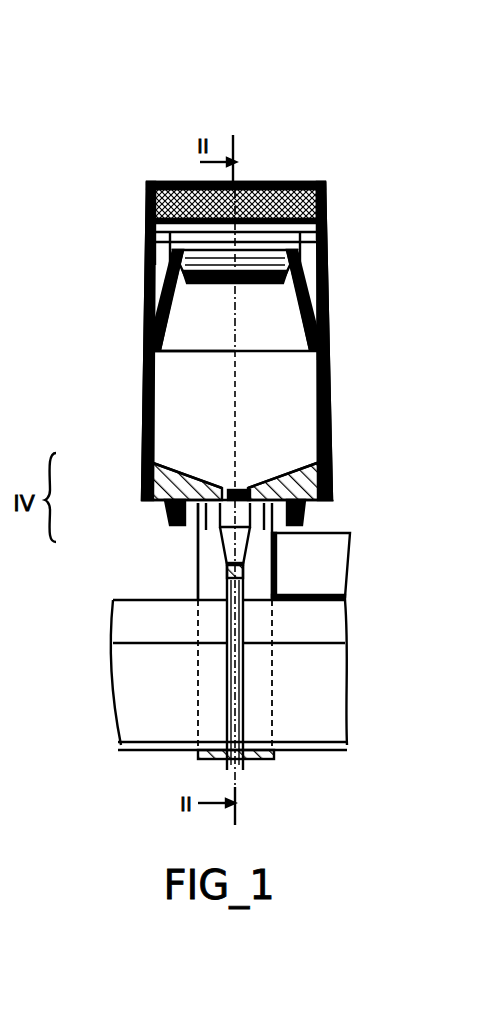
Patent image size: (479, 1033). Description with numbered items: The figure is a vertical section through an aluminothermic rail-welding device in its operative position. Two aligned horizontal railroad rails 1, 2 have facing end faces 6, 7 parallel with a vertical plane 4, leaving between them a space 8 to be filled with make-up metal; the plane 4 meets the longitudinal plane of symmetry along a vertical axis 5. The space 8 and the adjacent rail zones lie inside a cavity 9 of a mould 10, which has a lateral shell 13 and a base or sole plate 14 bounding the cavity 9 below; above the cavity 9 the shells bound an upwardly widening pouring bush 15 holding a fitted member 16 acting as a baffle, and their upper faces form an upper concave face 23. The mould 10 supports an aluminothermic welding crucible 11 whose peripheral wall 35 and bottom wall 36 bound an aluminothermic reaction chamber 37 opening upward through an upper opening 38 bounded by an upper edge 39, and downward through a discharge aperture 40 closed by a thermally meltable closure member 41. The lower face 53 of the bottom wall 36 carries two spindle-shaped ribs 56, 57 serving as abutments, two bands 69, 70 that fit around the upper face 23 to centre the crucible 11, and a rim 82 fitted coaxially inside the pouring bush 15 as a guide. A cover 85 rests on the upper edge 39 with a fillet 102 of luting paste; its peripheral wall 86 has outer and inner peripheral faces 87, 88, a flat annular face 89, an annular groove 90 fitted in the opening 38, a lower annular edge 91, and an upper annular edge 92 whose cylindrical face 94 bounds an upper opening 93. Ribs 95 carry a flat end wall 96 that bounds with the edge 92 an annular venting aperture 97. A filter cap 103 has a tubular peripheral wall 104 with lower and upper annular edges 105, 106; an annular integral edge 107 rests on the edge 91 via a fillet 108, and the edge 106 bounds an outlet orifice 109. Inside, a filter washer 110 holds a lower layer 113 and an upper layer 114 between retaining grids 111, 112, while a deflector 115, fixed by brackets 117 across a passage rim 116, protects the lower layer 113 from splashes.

The railroad rail 1 is at (322, 694).
The railroad rail 2 is at (148, 706).
The vertical plane 4 is at (226, 636).
The vertical axis 5 is at (248, 402).
The end face 6 is at (238, 692).
The end face 7 is at (240, 716).
The space 8 is at (243, 665).
The cavity 9 is at (246, 628).
The mould 10 is at (186, 580).
The aluminothermic welding crucible 11 is at (338, 401).
The lateral shell 13 is at (200, 562).
The base or sole plate 14 is at (267, 753).
The pouring bush 15 is at (273, 555).
The fitted member 16 is at (282, 575).
The upper concave face 23 is at (277, 467).
The peripheral wall 35 is at (142, 416).
The bottom wall 36 is at (328, 490).
The aluminothermic reaction chamber 37 is at (328, 368).
The upper opening 38 is at (322, 325).
The upper edge 39 is at (142, 365).
The discharge aperture 40 is at (241, 488).
The thermally meltable closure member 41 is at (232, 488).
The lower face 53 is at (148, 507).
The spindle-shaped rib 56 is at (307, 523).
The spindle-shaped rib 57 is at (167, 517).
The band 69 is at (328, 467).
The band 70 is at (193, 488).
The rim 82 is at (210, 532).
The cover 85 is at (322, 283).
The peripheral wall 86 is at (147, 282).
The outer peripheral face 87 is at (160, 250).
The inner peripheral face 88 is at (175, 318).
The flat annular face 89 is at (157, 373).
The annular groove 90 is at (145, 347).
The annular edge 91 is at (147, 322).
The annular edge 92 is at (323, 188).
The upper opening 93 is at (266, 185).
The cylindrical face 94 is at (145, 190).
The rib 95 is at (327, 233).
The end wall 96 is at (250, 286).
The venting aperture 97 is at (176, 186).
The fillet of luting paste 102 is at (323, 337).
The filter cap 103 is at (330, 198).
The peripheral wall 104 is at (328, 248).
The annular edge 105 is at (172, 354).
The annular edge 106 is at (328, 190).
The annular integral edge 107 is at (323, 326).
The fillet of luting paste 108 is at (323, 331).
The outlet orifice 109 is at (303, 185).
The filter washer 110 is at (190, 185).
The retaining grid 111 is at (328, 220).
The retaining grid 112 is at (239, 185).
The lower layer 113 is at (146, 225).
The upper layer 114 is at (257, 185).
The deflector 115 is at (298, 318).
The rim 116 is at (172, 290).
The bracket 117 is at (146, 238).